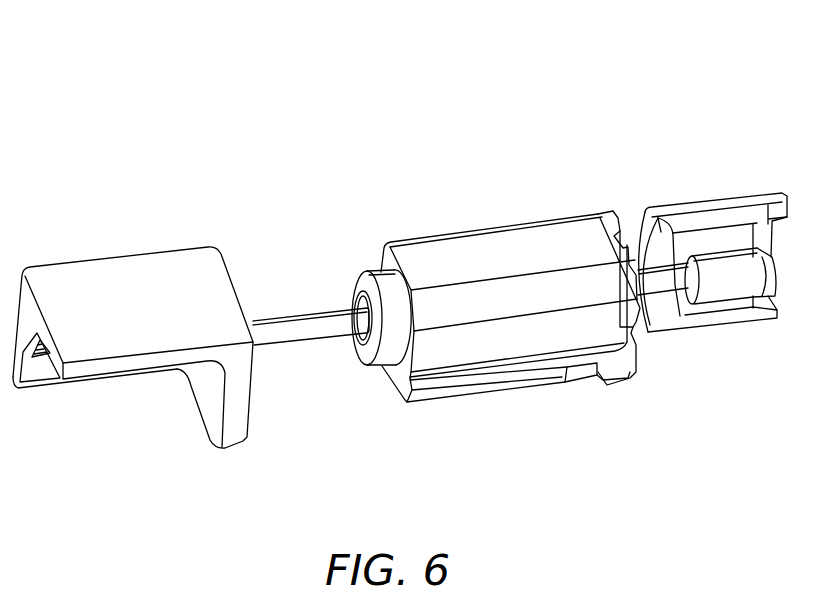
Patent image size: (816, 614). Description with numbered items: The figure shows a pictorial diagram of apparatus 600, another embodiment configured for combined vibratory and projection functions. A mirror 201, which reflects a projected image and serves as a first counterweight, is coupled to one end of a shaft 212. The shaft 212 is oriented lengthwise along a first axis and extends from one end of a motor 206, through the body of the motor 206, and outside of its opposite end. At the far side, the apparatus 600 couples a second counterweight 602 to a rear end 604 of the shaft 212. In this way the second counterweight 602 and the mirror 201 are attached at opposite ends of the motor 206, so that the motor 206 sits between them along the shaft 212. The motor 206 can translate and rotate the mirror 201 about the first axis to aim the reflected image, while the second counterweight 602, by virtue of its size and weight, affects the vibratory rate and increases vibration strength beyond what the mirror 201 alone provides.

The apparatus 600 is at (730, 71).
The mirror 201 is at (125, 257).
The shaft 212 is at (303, 333).
The motor 206 is at (488, 227).
The second counterweight 602 is at (717, 204).
The rear end of the shaft 604 is at (659, 283).